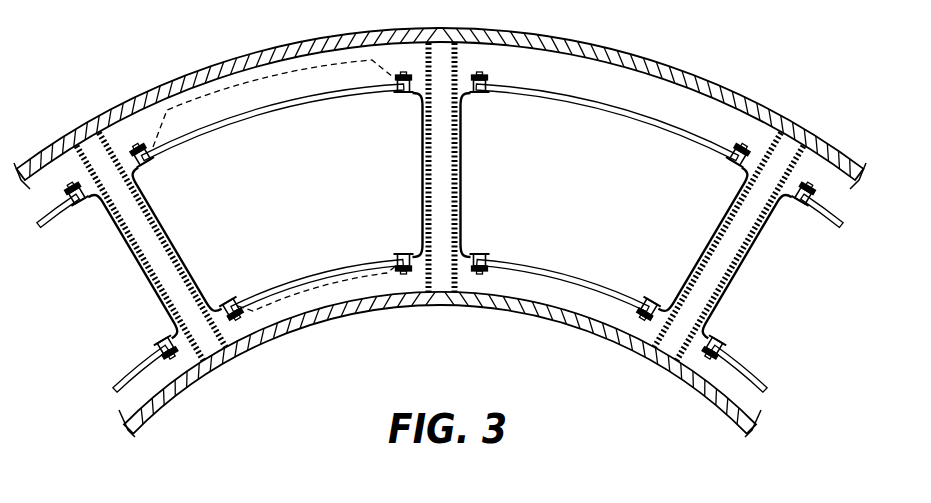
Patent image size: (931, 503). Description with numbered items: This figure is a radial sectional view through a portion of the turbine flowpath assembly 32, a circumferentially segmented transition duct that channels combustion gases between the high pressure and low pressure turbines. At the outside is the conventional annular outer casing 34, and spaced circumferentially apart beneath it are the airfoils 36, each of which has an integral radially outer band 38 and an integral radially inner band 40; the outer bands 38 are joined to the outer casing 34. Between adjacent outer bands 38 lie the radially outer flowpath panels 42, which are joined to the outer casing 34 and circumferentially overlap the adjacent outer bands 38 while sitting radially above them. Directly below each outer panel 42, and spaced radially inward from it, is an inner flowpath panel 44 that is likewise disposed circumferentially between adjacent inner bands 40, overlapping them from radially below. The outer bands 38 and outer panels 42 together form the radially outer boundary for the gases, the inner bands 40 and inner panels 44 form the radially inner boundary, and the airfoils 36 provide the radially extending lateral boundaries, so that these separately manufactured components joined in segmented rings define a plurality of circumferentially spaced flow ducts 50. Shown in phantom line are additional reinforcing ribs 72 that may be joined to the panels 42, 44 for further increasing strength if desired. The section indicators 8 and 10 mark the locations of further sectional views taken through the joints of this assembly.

The section line 8 is at (464, 72).
The section line 10 is at (464, 264).
The turbine flowpath assembly 32 is at (656, 63).
The outer casing 34 is at (556, 36).
The airfoil 36 is at (466, 160).
The outer band 38 is at (154, 153).
The inner band 40 is at (238, 300).
The outer flowpath panel 42 is at (263, 113).
The inner flowpath panel 44 is at (276, 286).
The flow duct 50 is at (312, 203).
The reinforcing rib 72 is at (252, 83).